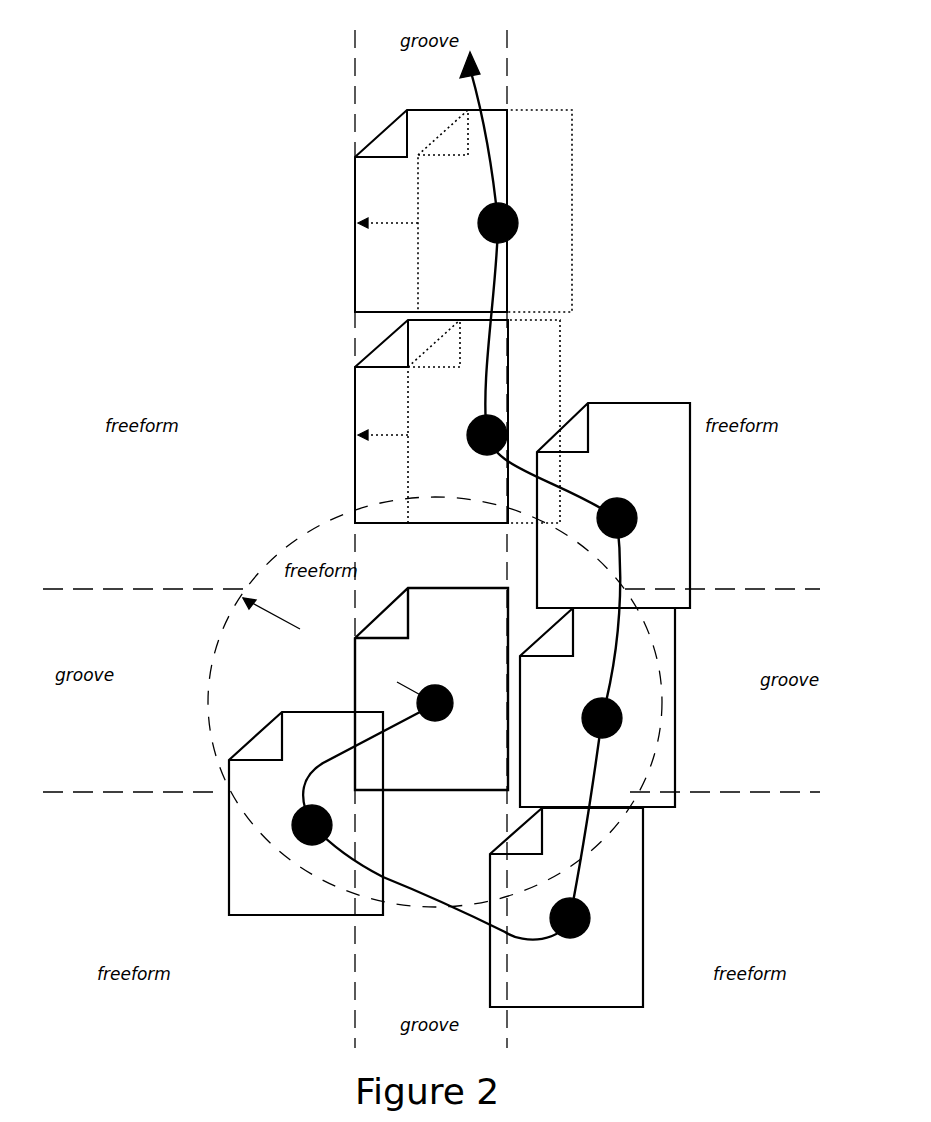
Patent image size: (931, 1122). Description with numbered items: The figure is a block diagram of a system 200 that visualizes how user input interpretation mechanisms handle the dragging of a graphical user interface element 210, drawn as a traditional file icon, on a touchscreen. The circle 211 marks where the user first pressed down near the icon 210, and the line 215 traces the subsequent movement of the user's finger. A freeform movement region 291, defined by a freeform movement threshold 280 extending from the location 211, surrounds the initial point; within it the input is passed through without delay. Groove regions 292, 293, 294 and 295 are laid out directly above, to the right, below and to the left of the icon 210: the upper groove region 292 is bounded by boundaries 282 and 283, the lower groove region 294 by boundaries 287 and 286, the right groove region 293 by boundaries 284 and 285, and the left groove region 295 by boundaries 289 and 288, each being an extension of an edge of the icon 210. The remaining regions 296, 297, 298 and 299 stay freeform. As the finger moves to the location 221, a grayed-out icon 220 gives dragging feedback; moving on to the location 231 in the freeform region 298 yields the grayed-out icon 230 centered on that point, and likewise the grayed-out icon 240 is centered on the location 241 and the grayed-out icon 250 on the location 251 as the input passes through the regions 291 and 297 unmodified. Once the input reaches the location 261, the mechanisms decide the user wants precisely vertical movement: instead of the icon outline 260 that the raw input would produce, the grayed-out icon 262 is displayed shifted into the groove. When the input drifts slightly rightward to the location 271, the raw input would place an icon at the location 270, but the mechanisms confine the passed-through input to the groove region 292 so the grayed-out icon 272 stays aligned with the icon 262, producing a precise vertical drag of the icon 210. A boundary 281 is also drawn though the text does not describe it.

The system 200 is at (164, 86).
The graphical user interface element 210 is at (432, 588).
The circle 211 is at (447, 686).
The line 215 is at (407, 890).
The icon 220 is at (320, 712).
The location 221 is at (322, 806).
The grayed-out icon 230 is at (643, 962).
The location 231 is at (590, 907).
The grayed-out icon 240 is at (675, 700).
The location 241 is at (597, 702).
The grayed-out icon 250 is at (690, 472).
The location 251 is at (627, 508).
The icon outline 260 is at (560, 338).
The location 261 is at (475, 423).
The grayed-out icon 262 is at (370, 353).
The location 270 is at (572, 130).
The location 271 is at (482, 213).
The grayed-out icon 272 is at (435, 108).
The freeform movement threshold 280 is at (292, 630).
The groove boundary 281 is at (258, 578).
The boundary 282 is at (355, 115).
The boundary 283 is at (508, 64).
The boundary 284 is at (718, 590).
The boundary 285 is at (760, 793).
The boundary 286 is at (508, 1030).
The boundary 287 is at (355, 950).
The boundary 288 is at (200, 793).
The boundary 289 is at (117, 586).
The freeform movement region 291 is at (329, 538).
The groove region 292 is at (376, 72).
The groove region 293 is at (767, 607).
The groove region 294 is at (376, 1005).
The groove region 295 is at (131, 776).
The freeform region 296 is at (144, 240).
The freeform region 297 is at (735, 240).
The freeform region 298 is at (715, 1027).
The freeform region 299 is at (154, 1024).